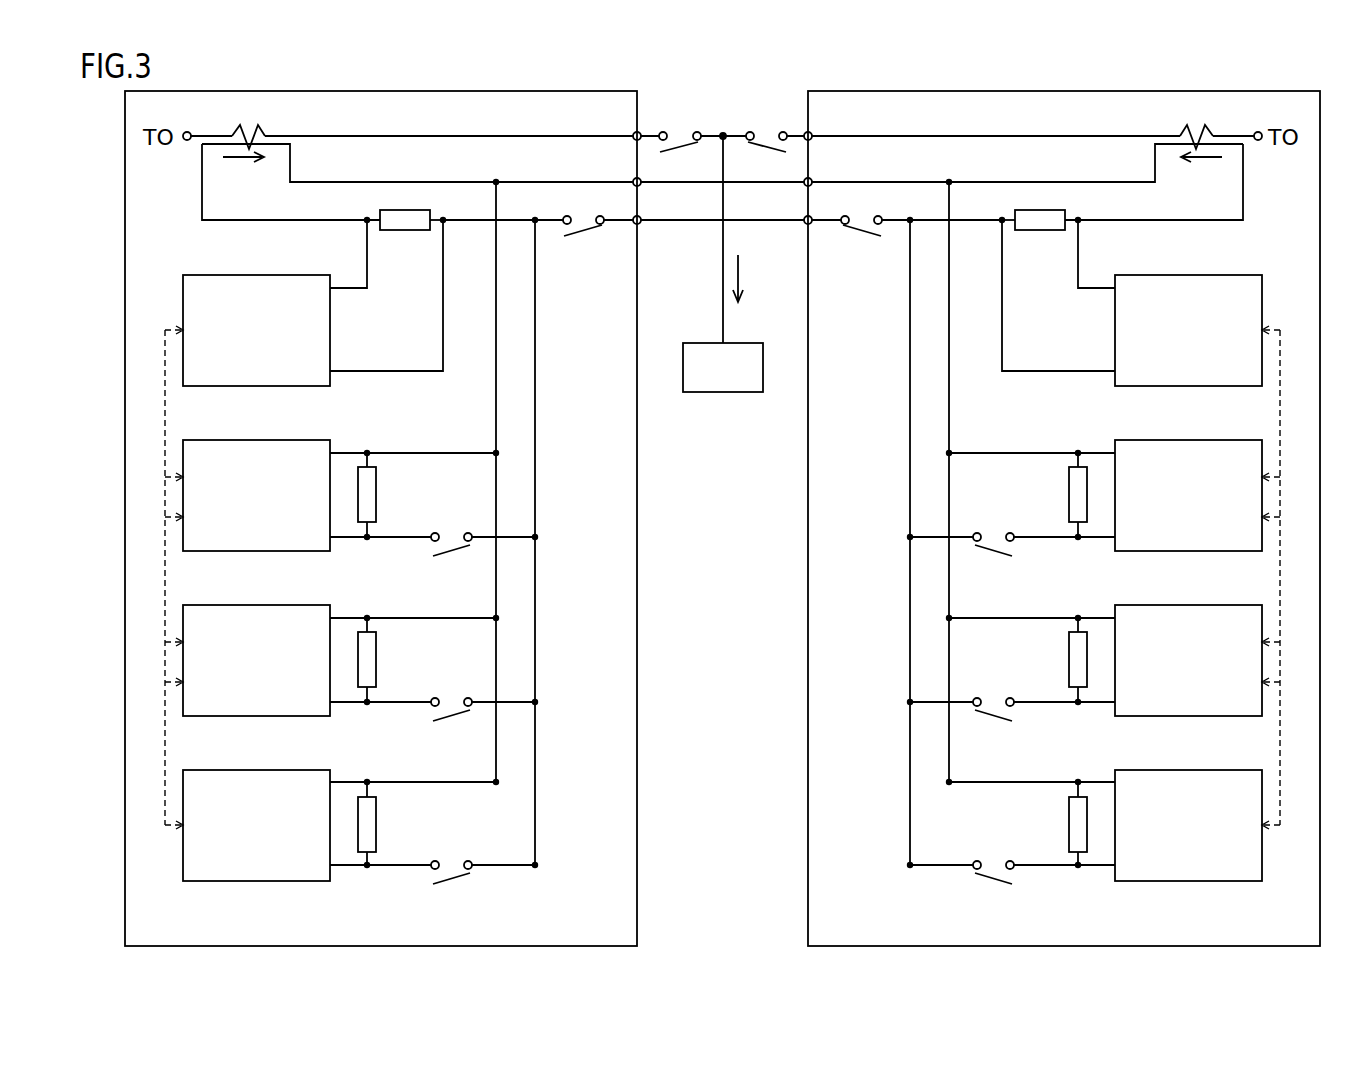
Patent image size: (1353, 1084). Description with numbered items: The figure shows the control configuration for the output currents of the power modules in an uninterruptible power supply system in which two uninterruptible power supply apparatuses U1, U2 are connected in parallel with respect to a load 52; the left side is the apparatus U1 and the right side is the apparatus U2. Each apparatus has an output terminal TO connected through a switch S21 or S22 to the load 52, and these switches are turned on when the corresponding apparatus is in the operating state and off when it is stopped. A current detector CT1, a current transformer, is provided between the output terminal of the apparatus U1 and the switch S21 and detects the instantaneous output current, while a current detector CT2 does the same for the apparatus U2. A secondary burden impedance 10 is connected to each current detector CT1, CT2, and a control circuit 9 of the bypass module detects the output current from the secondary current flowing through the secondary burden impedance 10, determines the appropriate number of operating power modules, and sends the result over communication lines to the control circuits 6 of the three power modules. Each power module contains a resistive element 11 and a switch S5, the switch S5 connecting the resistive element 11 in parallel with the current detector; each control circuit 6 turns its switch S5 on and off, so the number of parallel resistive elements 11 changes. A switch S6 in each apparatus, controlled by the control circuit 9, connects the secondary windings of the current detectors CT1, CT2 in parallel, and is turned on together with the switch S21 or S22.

The uninterruptible power supply apparatus U1 is at (595, 91).
The uninterruptible power supply apparatus U2 is at (1282, 91).
The current detector CT1 is at (238, 132).
The current detector CT2 is at (1207, 132).
The switch S21 is at (678, 127).
The switch S22 is at (763, 127).
The switch S6 is at (584, 238).
The switch S5 is at (455, 558).
The secondary burden impedance 10 is at (405, 232).
The control circuit 9 is at (277, 275).
The control circuit 6 is at (277, 440).
The resistive element 11 is at (378, 495).
The load 52 is at (744, 343).